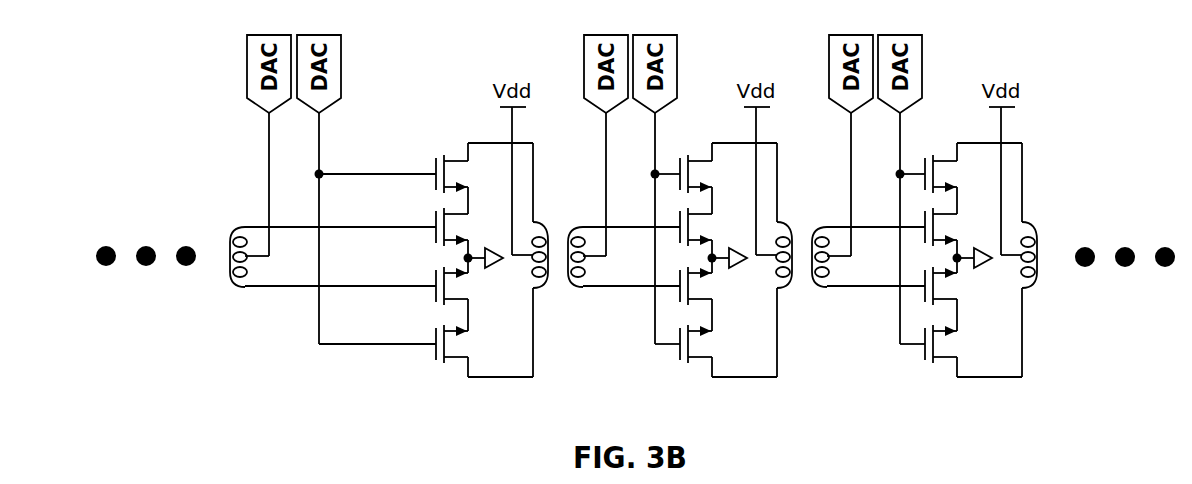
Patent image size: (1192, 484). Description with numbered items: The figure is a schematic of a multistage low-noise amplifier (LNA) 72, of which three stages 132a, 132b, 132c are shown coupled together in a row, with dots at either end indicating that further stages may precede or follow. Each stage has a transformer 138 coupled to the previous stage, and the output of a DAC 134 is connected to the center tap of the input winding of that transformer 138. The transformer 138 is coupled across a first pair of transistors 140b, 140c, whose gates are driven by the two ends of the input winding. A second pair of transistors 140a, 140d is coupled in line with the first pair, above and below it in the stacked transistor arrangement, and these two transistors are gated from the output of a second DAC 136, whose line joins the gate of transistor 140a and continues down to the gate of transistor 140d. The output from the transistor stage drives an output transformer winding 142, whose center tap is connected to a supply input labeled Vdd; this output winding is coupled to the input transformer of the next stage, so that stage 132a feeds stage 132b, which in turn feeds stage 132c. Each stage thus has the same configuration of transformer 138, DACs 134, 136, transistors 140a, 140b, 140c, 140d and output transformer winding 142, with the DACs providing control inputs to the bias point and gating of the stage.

The low-noise amplifier (LNA) 72 is at (133, 39).
The first LNA stage 132a is at (220, 388).
The second LNA stage 132b is at (560, 388).
The third LNA stage 132c is at (805, 388).
The DAC 134 is at (247, 63).
The DAC 136 is at (341, 61).
The transformer 138 is at (232, 278).
The transistor 140a is at (437, 170).
The transistor 140b is at (437, 224).
The transistor 140c is at (437, 282).
The transistor 140d is at (437, 338).
The output transformer winding 142 is at (542, 292).